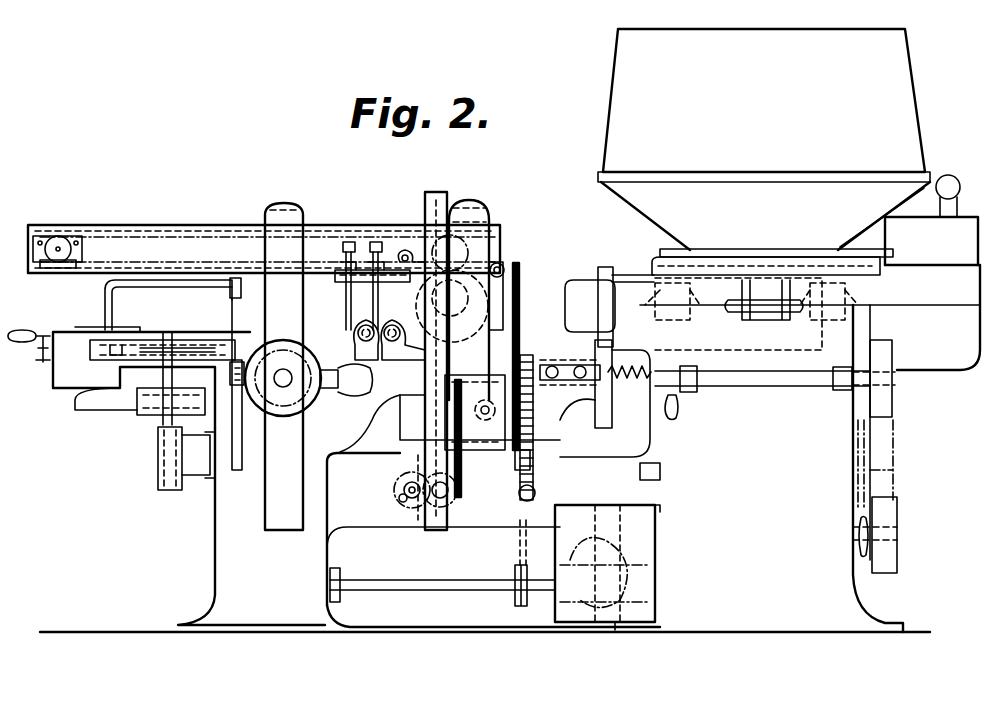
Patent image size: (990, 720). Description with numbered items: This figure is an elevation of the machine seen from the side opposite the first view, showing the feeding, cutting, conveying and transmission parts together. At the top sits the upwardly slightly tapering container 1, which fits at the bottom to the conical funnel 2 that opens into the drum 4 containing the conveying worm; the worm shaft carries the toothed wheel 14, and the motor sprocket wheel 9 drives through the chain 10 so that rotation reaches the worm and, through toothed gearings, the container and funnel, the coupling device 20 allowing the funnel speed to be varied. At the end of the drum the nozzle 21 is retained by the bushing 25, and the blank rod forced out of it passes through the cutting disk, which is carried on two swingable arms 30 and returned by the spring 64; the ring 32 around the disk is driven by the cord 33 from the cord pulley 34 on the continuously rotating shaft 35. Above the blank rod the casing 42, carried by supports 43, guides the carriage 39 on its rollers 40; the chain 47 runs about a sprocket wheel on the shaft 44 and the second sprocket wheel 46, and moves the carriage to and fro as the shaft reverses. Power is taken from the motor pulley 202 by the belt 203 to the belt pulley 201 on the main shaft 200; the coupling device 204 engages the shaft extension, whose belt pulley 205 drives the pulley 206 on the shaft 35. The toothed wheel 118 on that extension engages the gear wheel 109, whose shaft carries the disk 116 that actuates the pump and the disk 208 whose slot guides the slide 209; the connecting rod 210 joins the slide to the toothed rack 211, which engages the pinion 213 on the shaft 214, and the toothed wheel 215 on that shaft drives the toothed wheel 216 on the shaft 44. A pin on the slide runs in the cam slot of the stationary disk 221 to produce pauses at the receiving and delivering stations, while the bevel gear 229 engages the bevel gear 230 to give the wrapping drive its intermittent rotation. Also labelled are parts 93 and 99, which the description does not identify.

The container 1 is at (604, 127).
The conical funnel 2 is at (632, 203).
The drum 4 is at (664, 257).
The sprocket wheel 9 is at (868, 548).
The chain 10 is at (882, 470).
The toothed wheel 14 is at (578, 272).
The coupling device 20 is at (950, 176).
The nozzle 21 is at (604, 266).
The bushing 25 is at (622, 273).
The arms 30 is at (580, 410).
The ring 32 is at (518, 265).
The cord 33 is at (517, 545).
The cord pulley 34 is at (515, 605).
The shaft 35 is at (420, 592).
The carriage 39 is at (395, 262).
The rollers 40 is at (500, 262).
The casing 42 is at (220, 227).
The supports 43 is at (292, 208).
The shaft 44 is at (466, 218).
The second sprocket wheel 46 is at (65, 238).
The chain 47 is at (146, 236).
The spring 64 is at (620, 376).
The box 93 is at (655, 537).
The bracket 99 is at (548, 364).
The gear wheel 109 is at (531, 502).
The disk 116 is at (650, 463).
The toothed wheel 118 is at (523, 355).
The main shaft 200 is at (771, 388).
The belt pulley 201 is at (892, 349).
The second pulley 202 is at (890, 512).
The belt 203 is at (893, 444).
The coupling device 204 is at (673, 418).
The belt pulley 205 is at (612, 400).
The pulley 206 is at (660, 560).
The disk 208 is at (458, 490).
The slide 209 is at (438, 392).
The connecting rod 210 is at (428, 368).
The toothed rack 211 is at (440, 215).
The pinion 213 is at (468, 300).
The shaft 214 is at (520, 282).
The toothed wheel 215 is at (488, 310).
The toothed wheel 216 is at (470, 240).
The stationary disk 221 is at (400, 470).
The bevel gear 229 is at (302, 415).
The bevel gear 230 is at (262, 455).